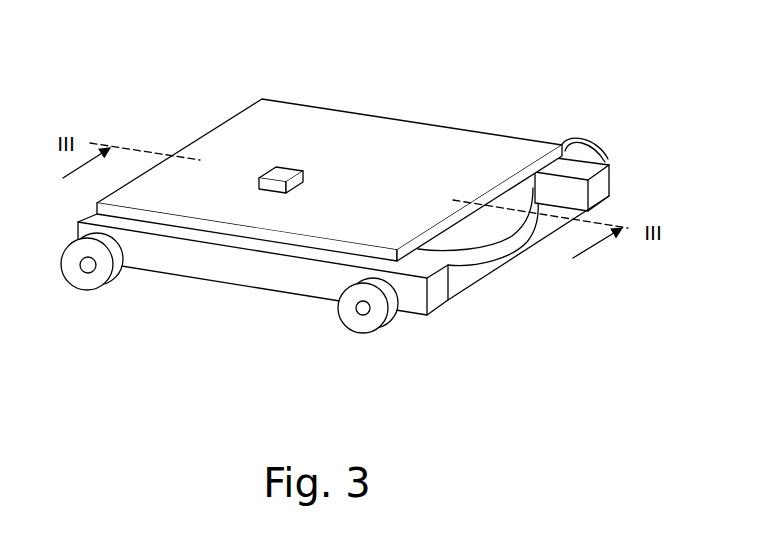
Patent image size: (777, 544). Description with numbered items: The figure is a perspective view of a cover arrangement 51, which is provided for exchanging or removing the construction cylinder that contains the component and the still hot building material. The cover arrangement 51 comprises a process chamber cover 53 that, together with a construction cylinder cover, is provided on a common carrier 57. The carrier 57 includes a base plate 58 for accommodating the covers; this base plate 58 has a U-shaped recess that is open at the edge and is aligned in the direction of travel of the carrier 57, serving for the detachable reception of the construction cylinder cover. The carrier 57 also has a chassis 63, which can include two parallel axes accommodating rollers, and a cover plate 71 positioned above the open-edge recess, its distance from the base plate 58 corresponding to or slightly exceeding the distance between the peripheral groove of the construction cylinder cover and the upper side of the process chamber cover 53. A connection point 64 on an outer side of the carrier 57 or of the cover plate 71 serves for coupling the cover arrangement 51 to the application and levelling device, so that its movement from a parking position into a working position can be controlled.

The cover arrangement 51 is at (337, 234).
The process chamber cover 53 is at (482, 252).
The carrier 57 is at (552, 128).
The base plate 58 is at (538, 226).
The chassis 63 is at (371, 352).
The connection point 64 is at (281, 164).
The cover plate 71 is at (385, 127).